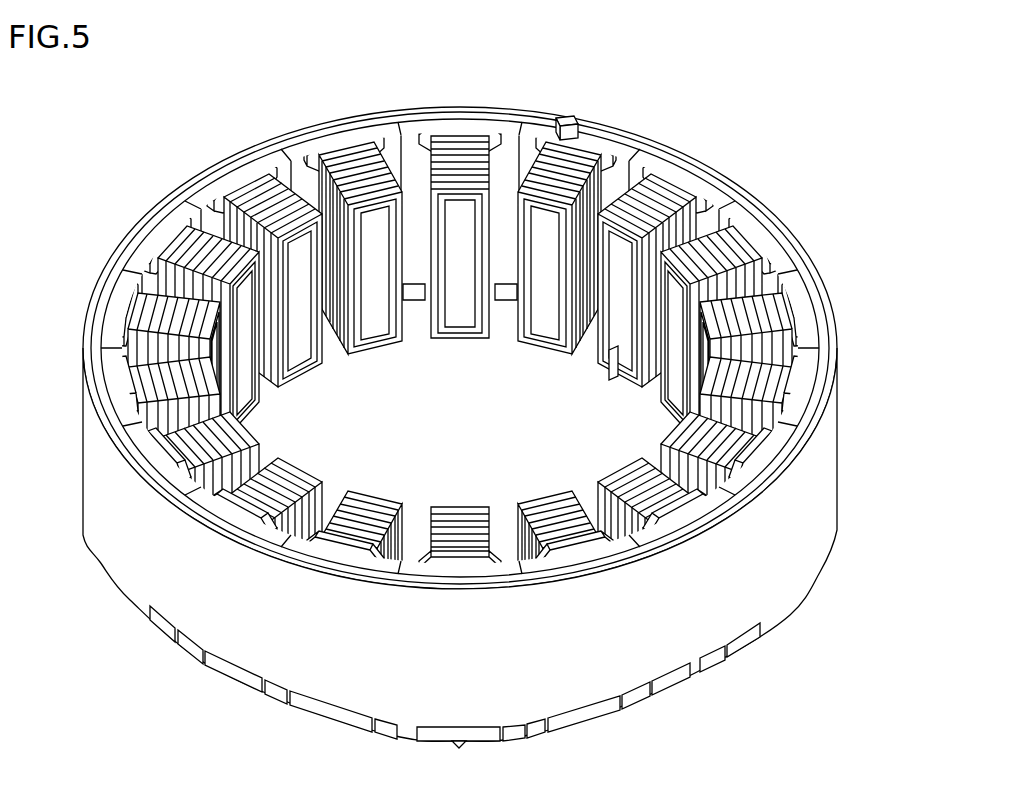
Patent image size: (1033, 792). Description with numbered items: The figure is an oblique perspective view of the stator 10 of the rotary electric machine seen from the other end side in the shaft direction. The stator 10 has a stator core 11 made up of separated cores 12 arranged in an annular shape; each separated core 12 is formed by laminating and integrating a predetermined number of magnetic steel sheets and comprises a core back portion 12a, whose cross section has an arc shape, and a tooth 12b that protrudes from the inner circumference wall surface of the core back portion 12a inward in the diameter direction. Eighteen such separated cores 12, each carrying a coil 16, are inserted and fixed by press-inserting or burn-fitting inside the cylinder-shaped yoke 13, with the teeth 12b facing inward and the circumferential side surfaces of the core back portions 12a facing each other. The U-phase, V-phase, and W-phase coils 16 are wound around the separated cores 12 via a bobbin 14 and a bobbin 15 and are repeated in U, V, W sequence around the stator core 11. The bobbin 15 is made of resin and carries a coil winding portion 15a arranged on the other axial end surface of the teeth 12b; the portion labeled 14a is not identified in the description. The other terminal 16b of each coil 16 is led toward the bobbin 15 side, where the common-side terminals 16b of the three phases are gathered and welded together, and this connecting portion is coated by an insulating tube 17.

The stator 10 is at (127, 157).
The stator core 11 is at (810, 337).
The separated core 12 is at (510, 393).
The core back portion 12a is at (413, 302).
The tooth 12b is at (460, 308).
The yoke 13 is at (820, 460).
The bobbin 14 is at (726, 673).
The insulator rib 14a is at (618, 367).
The bobbin 15 is at (787, 247).
The coil winding portion 15a is at (747, 230).
The coil 16 is at (700, 170).
The terminal 16b is at (647, 137).
The insulating tube 17 is at (575, 121).